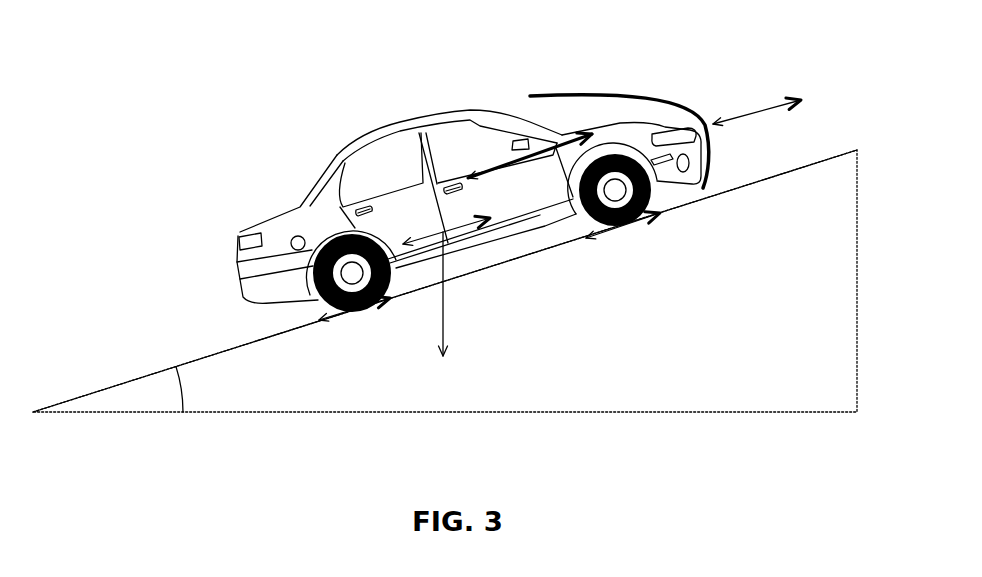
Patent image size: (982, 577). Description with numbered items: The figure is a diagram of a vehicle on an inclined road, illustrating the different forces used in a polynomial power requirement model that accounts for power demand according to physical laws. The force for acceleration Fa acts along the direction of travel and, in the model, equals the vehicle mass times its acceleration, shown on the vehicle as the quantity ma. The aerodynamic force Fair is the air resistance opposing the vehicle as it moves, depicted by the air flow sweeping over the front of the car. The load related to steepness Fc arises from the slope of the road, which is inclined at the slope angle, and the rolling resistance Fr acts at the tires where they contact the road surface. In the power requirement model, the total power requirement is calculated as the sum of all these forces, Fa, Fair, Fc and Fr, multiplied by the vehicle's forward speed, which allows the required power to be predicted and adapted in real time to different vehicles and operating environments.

The force for acceleration Fa is at (515, 156).
The load related to steepness Fc is at (446, 225).
The rolling resistance Fr is at (489, 280).
The mass times acceleration ma is at (461, 294).
The aerodynamic force Fair is at (757, 125).